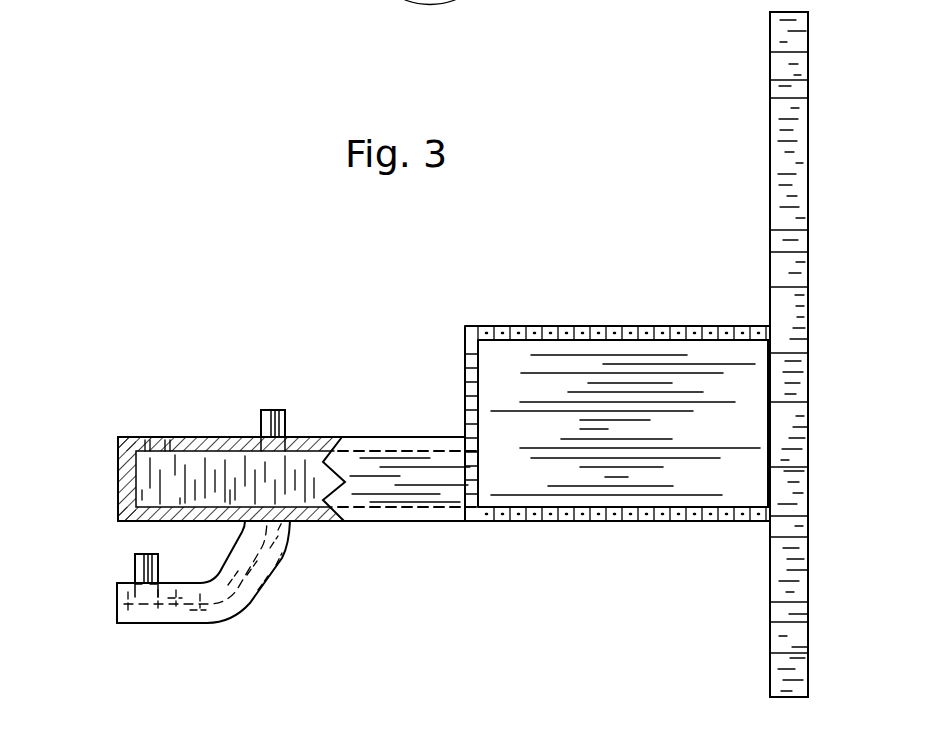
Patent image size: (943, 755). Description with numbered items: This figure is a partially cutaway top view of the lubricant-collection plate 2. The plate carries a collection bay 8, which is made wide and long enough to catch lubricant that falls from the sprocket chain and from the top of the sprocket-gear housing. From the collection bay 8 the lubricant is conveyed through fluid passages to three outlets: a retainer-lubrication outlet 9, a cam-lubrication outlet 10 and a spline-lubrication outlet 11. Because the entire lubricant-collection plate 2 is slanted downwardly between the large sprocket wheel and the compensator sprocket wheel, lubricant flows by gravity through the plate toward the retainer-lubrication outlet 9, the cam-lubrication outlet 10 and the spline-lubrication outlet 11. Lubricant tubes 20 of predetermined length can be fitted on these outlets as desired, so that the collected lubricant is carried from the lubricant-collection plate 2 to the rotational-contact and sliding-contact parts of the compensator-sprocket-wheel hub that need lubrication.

The lubricant-collection plate 2 is at (400, 446).
The collection bay 8 is at (618, 412).
The retainer-lubrication outlet 9 is at (148, 587).
The cam-lubrication outlet 10 is at (213, 445).
The spline-lubrication outlet 11 is at (308, 438).
The lubricant tubes 20 is at (272, 412).